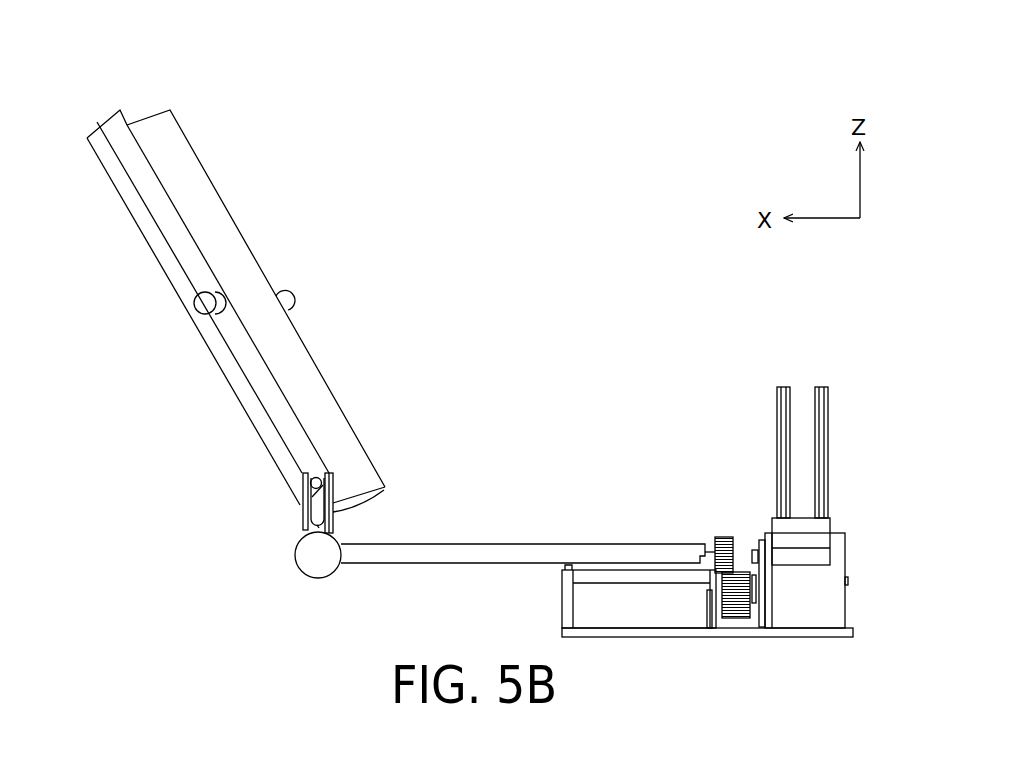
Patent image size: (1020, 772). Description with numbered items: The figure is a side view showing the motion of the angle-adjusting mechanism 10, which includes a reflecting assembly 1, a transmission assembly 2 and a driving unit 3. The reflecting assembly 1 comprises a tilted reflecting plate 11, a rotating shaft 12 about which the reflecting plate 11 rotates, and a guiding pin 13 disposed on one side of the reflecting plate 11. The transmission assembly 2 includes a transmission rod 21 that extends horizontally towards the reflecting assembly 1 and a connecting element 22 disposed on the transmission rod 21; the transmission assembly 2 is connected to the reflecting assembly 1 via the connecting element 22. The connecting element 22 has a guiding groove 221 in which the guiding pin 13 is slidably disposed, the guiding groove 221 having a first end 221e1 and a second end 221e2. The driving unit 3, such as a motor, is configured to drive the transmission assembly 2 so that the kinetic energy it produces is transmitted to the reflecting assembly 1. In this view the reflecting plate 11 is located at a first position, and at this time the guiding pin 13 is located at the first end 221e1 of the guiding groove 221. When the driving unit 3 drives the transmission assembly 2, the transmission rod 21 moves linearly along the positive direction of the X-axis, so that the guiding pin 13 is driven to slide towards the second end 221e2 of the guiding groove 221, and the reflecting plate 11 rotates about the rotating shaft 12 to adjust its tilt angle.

The angle-adjusting mechanism 10 is at (78, 61).
The reflecting assembly 1 is at (84, 265).
The reflecting plate 11 is at (162, 250).
The rotating shaft 12 is at (200, 305).
The guiding pin 13 is at (303, 478).
The transmission assembly 2 is at (218, 540).
The transmission rod 21 is at (460, 560).
The connecting element 22 is at (304, 527).
The guiding groove 221 is at (492, 382).
The first end of the guiding groove 221e1 is at (317, 462).
The second end of the guiding groove 221e2 is at (338, 522).
The driving unit 3 is at (836, 562).